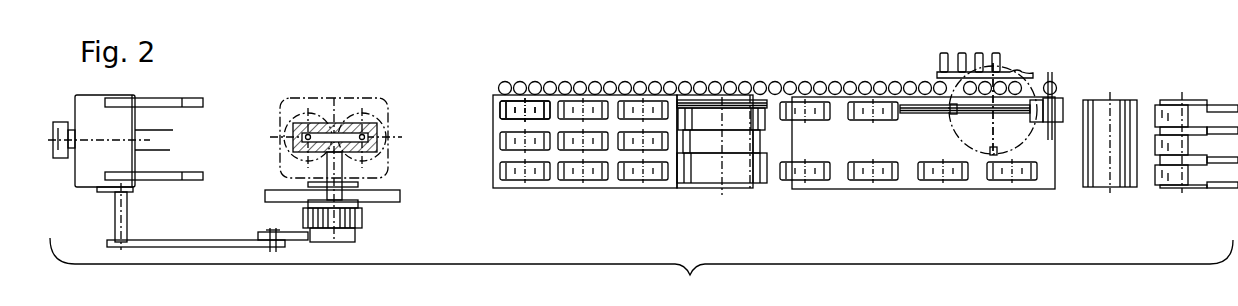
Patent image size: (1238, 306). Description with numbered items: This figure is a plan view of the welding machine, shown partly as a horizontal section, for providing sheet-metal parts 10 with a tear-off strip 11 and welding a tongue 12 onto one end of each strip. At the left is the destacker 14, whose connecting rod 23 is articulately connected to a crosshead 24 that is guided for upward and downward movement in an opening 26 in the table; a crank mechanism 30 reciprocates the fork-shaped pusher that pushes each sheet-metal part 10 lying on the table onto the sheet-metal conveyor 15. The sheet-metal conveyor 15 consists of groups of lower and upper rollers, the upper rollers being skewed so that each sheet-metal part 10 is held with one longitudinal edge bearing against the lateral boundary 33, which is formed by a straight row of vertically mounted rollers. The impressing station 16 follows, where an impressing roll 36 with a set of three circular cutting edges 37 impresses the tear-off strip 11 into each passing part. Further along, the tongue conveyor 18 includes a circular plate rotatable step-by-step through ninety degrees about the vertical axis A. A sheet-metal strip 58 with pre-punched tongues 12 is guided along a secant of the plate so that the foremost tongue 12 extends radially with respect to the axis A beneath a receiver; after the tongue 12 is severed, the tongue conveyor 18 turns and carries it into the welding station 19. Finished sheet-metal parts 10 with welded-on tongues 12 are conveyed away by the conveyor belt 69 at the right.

The destacker 14 is at (258, 91).
The opening 26 is at (342, 143).
The crosshead 24 is at (341, 122).
The connecting rod 23 is at (382, 197).
The crank mechanism 30 is at (250, 232).
The lateral boundary 33 is at (495, 79).
The sheet-metal part 10 is at (493, 122).
The sheet-metal conveyor 15 is at (674, 168).
The impressing station 16 is at (727, 141).
The circular cutting edges 37 is at (713, 112).
The impressing roll 36 is at (735, 182).
The tear-off strip 11 is at (925, 113).
The tongue conveyor 18 is at (1011, 64).
The vertical axis A is at (995, 112).
The sheet-metal strip 58 is at (940, 74).
The tongue 12 is at (996, 53).
The welding station 19 is at (1062, 85).
The conveyor belt 69 is at (1223, 110).